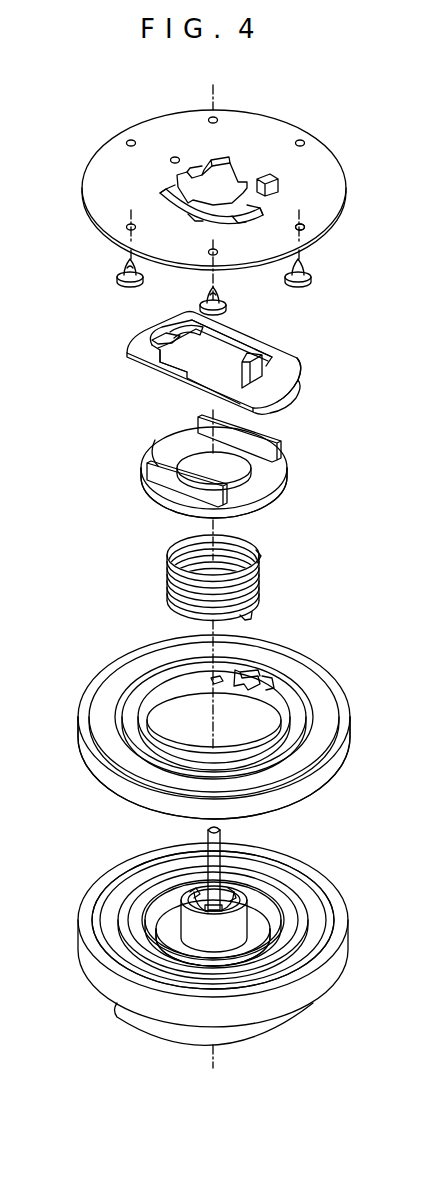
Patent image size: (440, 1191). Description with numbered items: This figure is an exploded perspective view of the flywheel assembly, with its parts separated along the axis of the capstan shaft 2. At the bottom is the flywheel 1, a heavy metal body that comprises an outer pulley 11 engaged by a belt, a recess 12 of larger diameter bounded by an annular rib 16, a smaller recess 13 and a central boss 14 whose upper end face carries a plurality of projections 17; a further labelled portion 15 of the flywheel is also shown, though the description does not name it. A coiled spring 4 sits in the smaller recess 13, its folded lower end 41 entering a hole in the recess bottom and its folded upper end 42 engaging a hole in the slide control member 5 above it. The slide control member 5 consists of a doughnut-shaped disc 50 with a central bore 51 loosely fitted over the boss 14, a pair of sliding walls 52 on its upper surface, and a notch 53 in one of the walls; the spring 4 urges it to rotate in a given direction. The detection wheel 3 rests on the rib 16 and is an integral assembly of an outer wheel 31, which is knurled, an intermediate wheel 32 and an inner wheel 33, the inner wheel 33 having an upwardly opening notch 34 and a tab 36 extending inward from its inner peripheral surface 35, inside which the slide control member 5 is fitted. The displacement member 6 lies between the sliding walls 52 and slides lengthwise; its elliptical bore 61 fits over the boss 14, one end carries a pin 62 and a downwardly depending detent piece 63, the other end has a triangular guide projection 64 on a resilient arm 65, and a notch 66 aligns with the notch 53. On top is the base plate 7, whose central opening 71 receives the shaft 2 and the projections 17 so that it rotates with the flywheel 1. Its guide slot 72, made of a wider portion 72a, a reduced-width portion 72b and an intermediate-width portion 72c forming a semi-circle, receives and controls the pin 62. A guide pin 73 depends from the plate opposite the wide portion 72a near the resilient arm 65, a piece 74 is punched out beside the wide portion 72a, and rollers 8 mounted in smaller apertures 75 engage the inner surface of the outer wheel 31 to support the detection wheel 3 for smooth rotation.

The flywheel 1 is at (346, 915).
The capstan shaft 2 is at (206, 838).
The detection wheel 3 is at (327, 672).
The coiled spring 4 is at (258, 583).
The slide control member 5 is at (289, 481).
The displacement member 6 is at (301, 367).
The base plate 7 is at (334, 178).
The rollers 8 is at (118, 273).
The outer pulley 11 is at (290, 1028).
The recess of larger diameter 12 is at (281, 882).
The recess of smaller diameter 13 is at (258, 935).
The central boss 14 is at (175, 945).
The intermediate ring 15 is at (325, 976).
The annular rib 16 is at (95, 900).
The projections 17 is at (238, 888).
The outer wheel 31 is at (348, 717).
The intermediate wheel 32 is at (305, 697).
The inner wheel 33 is at (276, 683).
The notch 34 is at (249, 688).
The inner peripheral surface 35 is at (165, 694).
The tab 36 is at (219, 686).
The folded lower end 41 is at (253, 617).
The folded upper end 42 is at (258, 562).
The doughnut-shaped disc 50 is at (162, 497).
The central bore 51 is at (245, 458).
The sliding walls 52 is at (275, 448).
The notch 53 is at (164, 456).
The elliptical bore 61 is at (232, 352).
The pin 62 is at (262, 372).
The detent piece 63 is at (278, 402).
The triangular guide projection 64 is at (162, 333).
The resilient arm 65 is at (176, 333).
The notch 66 is at (168, 368).
The opening 71 is at (222, 172).
The guide slot 72 is at (262, 209).
The wider portion 72a is at (237, 217).
The slot portion of reduced width 72b is at (193, 216).
The slot portion of intermediate width 72c is at (167, 192).
The guide pin 73 is at (177, 156).
The punched piece 74 is at (259, 180).
The smaller apertures 75 is at (301, 222).